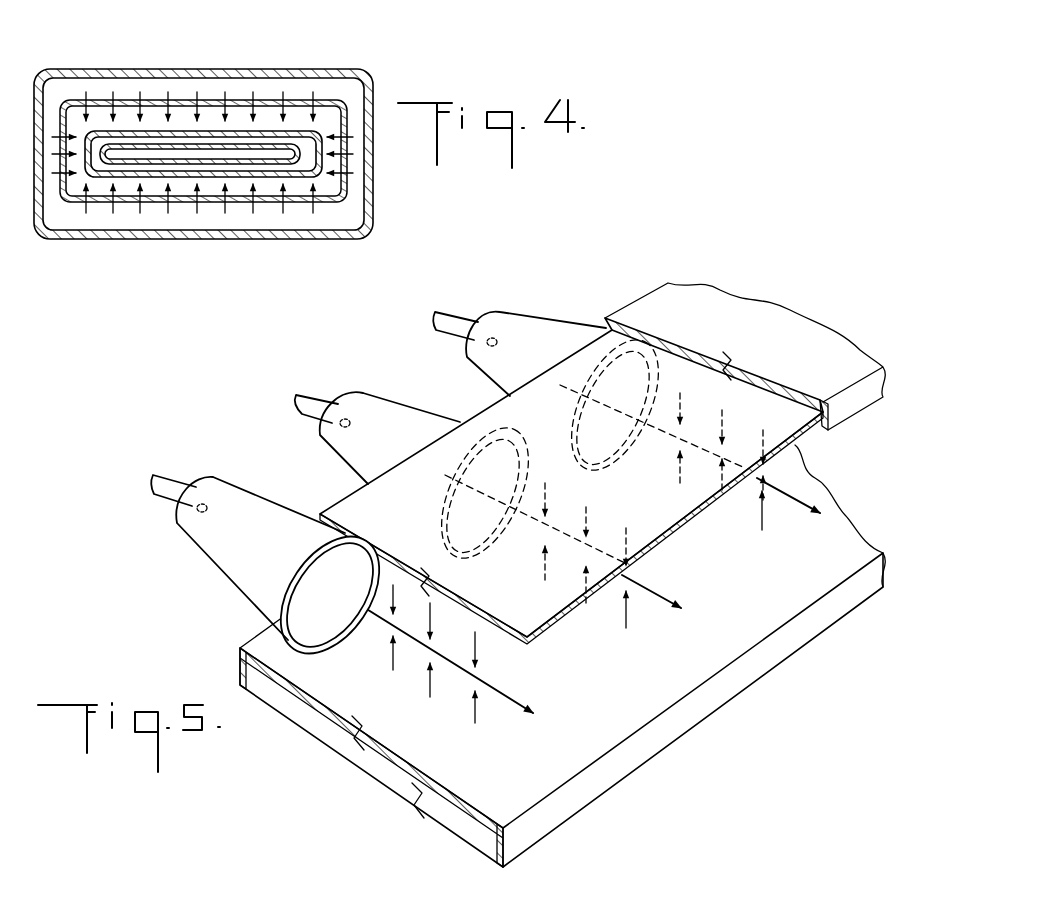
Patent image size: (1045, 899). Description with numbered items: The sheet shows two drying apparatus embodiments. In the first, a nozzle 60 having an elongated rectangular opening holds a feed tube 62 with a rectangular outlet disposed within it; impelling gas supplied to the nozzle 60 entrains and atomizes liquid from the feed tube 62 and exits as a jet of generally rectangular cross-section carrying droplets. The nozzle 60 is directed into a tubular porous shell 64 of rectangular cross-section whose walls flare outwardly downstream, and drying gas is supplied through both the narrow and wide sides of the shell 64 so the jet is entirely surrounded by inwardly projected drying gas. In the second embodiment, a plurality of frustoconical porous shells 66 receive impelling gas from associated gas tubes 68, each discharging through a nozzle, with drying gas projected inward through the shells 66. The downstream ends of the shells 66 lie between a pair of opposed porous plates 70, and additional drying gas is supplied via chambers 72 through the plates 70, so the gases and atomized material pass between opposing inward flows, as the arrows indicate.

In FIG. 4, the nozzle 60 is at (260, 132).
In FIG. 4, the feed tube 62 is at (247, 163).
In FIG. 4, the tubular porous shell 64 is at (202, 106).
In FIG. 5, the frustoconical porous shells 66 is at (204, 554).
In FIG. 5, the gas tubes 68 is at (172, 475).
In FIG. 5, the opposed porous plates 70 is at (805, 428).
In FIG. 5, the chambers 72 is at (728, 333).